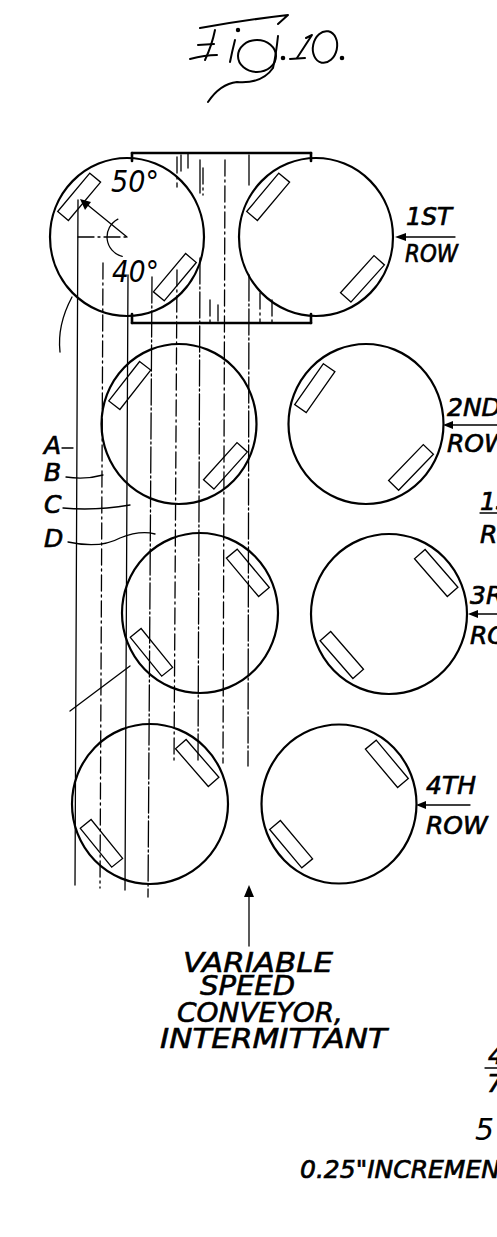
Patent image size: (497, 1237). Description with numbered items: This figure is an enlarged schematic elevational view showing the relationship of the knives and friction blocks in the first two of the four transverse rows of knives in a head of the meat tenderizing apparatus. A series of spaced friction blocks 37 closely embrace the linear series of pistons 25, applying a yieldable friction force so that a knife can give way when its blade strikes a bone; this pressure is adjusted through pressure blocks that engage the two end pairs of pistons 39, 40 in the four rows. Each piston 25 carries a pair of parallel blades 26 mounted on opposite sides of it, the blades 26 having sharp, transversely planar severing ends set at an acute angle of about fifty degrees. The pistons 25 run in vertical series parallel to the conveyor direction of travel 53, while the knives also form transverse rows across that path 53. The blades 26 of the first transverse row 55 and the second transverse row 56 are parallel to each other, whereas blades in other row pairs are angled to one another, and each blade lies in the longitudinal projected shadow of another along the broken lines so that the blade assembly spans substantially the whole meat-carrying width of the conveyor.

The piston 25 is at (160, 231).
The blade 26 is at (95, 172).
The friction block 37 is at (237, 173).
The end pair of pistons 39 is at (103, 418).
The end pair of pistons 40 is at (95, 750).
The direction of travel 53 is at (249, 923).
The first transverse row 55 is at (72, 186).
The second transverse row 56 is at (182, 255).